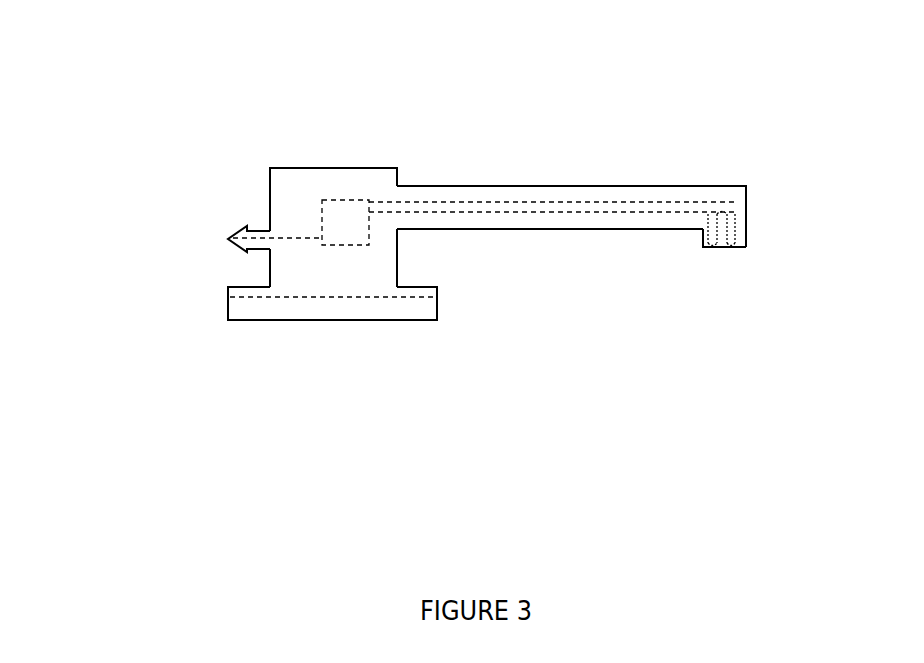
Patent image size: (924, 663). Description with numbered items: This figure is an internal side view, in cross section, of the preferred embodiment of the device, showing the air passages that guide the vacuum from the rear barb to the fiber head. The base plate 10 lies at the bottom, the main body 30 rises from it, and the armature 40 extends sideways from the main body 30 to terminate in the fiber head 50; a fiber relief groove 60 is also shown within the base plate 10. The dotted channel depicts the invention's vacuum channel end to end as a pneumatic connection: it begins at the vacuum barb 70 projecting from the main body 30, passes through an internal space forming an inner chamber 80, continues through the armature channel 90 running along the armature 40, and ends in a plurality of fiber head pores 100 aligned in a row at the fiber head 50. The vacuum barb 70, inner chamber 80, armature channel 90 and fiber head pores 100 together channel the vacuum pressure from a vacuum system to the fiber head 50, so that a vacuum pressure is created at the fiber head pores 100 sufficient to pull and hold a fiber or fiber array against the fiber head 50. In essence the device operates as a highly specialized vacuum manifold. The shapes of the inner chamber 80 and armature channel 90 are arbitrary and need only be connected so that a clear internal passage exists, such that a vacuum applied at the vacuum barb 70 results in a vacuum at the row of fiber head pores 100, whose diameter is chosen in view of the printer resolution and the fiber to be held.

The base plate 10 is at (225, 323).
The main body 30 is at (262, 185).
The armature 40 is at (547, 183).
The fiber head 50 is at (702, 248).
The fiber relief groove 60 is at (447, 300).
The vacuum barb 70 is at (222, 236).
The inner chamber 80 is at (315, 195).
The armature channel 90 is at (383, 195).
The fiber head pores 100 is at (743, 227).